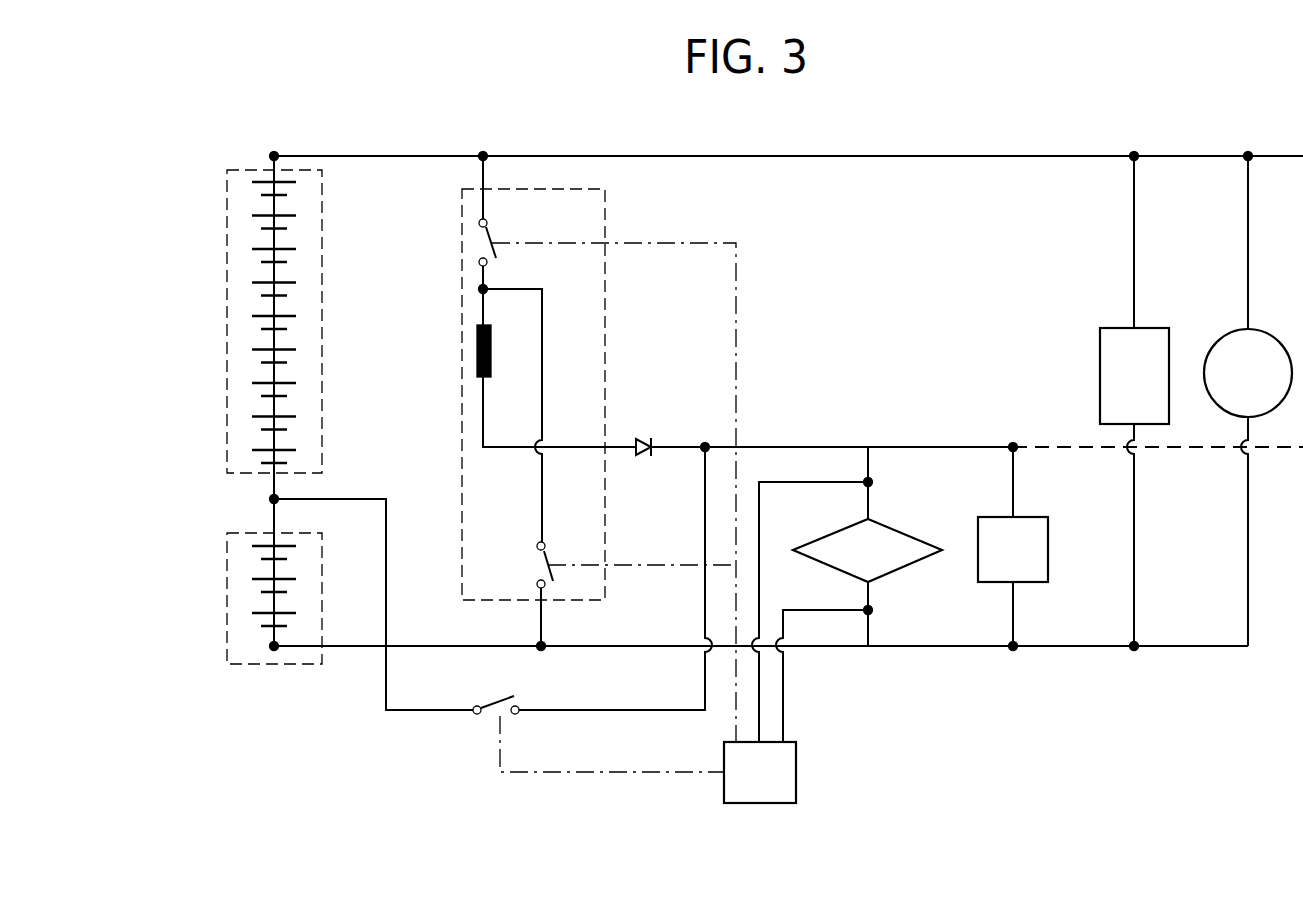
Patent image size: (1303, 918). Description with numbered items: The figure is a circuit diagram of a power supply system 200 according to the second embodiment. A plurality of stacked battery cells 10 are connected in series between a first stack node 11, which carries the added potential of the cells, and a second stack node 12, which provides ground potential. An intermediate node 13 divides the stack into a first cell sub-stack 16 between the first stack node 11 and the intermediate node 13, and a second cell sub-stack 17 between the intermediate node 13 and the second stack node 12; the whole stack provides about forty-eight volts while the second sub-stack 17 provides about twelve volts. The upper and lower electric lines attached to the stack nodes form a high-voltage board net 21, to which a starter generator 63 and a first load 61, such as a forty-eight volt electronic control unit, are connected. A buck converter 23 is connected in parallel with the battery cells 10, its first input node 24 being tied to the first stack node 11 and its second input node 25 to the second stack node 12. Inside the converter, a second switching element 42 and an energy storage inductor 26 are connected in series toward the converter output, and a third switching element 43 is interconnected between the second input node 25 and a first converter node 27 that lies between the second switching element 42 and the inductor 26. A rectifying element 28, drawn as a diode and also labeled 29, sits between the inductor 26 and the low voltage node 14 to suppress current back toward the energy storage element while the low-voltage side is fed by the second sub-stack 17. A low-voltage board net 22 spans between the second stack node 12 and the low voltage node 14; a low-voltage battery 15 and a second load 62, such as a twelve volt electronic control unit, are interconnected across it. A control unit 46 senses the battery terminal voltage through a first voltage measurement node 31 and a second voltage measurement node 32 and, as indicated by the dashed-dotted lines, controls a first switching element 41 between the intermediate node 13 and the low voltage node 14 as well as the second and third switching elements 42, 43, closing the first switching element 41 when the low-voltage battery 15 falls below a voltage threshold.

The power supply system 200 is at (236, 122).
The battery cells 10 is at (266, 292).
The first stack node 11 is at (274, 152).
The second stack node 12 is at (272, 648).
The intermediate node 13 is at (270, 499).
The low voltage node 14 is at (705, 441).
The low-voltage battery 15 is at (853, 564).
The first cell sub-stack 16 is at (227, 224).
The second cell sub-stack 17 is at (227, 612).
The high-voltage board net 21 is at (939, 153).
The low-voltage board net 22 is at (956, 442).
The buck converter 23 is at (462, 218).
The first input node 24 is at (483, 152).
The second input node 25 is at (546, 642).
The energy storage inductor 26 is at (476, 351).
The first converter node 27 is at (480, 289).
The rectifying element 28 is at (641, 417).
The rectifier 29 is at (643, 438).
The first voltage measurement node 31 is at (872, 482).
The second voltage measurement node 32 is at (872, 610).
The first switching element 41 is at (480, 706).
The second switching element 42 is at (490, 231).
The third switching element 43 is at (548, 553).
The control unit 46 is at (746, 786).
The first load 61 is at (1119, 391).
The second load 62 is at (998, 563).
The starter generator 63 is at (1233, 389).